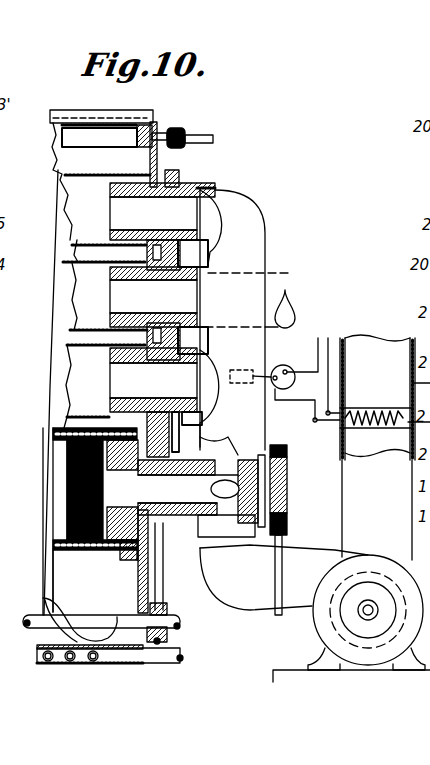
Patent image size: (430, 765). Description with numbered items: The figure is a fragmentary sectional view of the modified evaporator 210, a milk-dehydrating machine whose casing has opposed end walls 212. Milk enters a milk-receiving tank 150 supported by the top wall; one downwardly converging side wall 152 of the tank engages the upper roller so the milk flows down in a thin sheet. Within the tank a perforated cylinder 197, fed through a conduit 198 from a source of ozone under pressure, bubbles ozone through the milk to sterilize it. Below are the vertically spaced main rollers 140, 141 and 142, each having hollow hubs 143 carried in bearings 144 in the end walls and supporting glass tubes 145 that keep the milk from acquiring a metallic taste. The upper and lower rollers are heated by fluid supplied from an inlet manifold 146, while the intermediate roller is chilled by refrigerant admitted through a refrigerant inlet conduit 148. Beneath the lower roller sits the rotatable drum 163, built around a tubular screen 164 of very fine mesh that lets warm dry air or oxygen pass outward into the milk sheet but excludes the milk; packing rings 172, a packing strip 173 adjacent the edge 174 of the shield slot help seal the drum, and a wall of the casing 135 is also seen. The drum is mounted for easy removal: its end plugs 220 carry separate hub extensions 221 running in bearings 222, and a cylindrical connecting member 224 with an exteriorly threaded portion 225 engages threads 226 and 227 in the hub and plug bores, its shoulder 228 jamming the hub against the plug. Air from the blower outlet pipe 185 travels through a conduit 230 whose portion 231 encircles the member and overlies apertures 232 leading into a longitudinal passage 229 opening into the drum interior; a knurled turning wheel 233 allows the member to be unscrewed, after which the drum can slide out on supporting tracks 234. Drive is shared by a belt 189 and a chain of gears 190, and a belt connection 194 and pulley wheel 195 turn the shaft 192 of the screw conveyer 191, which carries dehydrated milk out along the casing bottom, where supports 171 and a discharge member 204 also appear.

The housing wall 135 is at (50, 387).
The main roller 140 is at (67, 223).
The main roller 141 is at (65, 286).
The main roller 142 is at (72, 338).
The hollow hub 143 is at (117, 188).
The bearing 144 is at (150, 233).
The glass tube 145 is at (122, 162).
The inlet manifold 146 is at (260, 207).
The refrigerant inlet conduit 148 is at (286, 291).
The milk-receiving tank 150 is at (88, 110).
The side wall 152 is at (62, 172).
The rotatable drum 163 is at (62, 447).
The tubular screen 164 is at (72, 462).
The support 171 is at (72, 552).
The packing ring 172 is at (108, 552).
The packing strip 173 is at (88, 427).
The edge 174 is at (65, 427).
The outlet pipe 185 is at (297, 600).
The belt 189 is at (200, 423).
The chain of gears 190 is at (186, 266).
The screw conveyer 191 is at (43, 603).
The shaft 192 is at (33, 621).
The belt connection 194 is at (168, 608).
The pulley wheel 195 is at (168, 635).
The perforated cylinder 197 is at (123, 122).
The conduit 198 is at (197, 137).
The conveyor 204 is at (180, 662).
The modified evaporator 210 is at (71, 100).
The end wall 212 is at (160, 158).
The end plug 220 is at (67, 517).
The hub extension 221 is at (175, 522).
The bearing 222 is at (178, 435).
The connecting member 224 is at (305, 480).
The exteriorly threaded portion 225 is at (160, 486).
The threads 226 is at (160, 478).
The threads 227 is at (86, 487).
The shoulder 228 is at (252, 543).
The passage 229 is at (285, 518).
The conduit 230 is at (235, 597).
The portion 231 is at (245, 455).
The apertures 232 is at (222, 507).
The knurled turning wheel 233 is at (284, 455).
The supporting tracks 234 is at (125, 560).